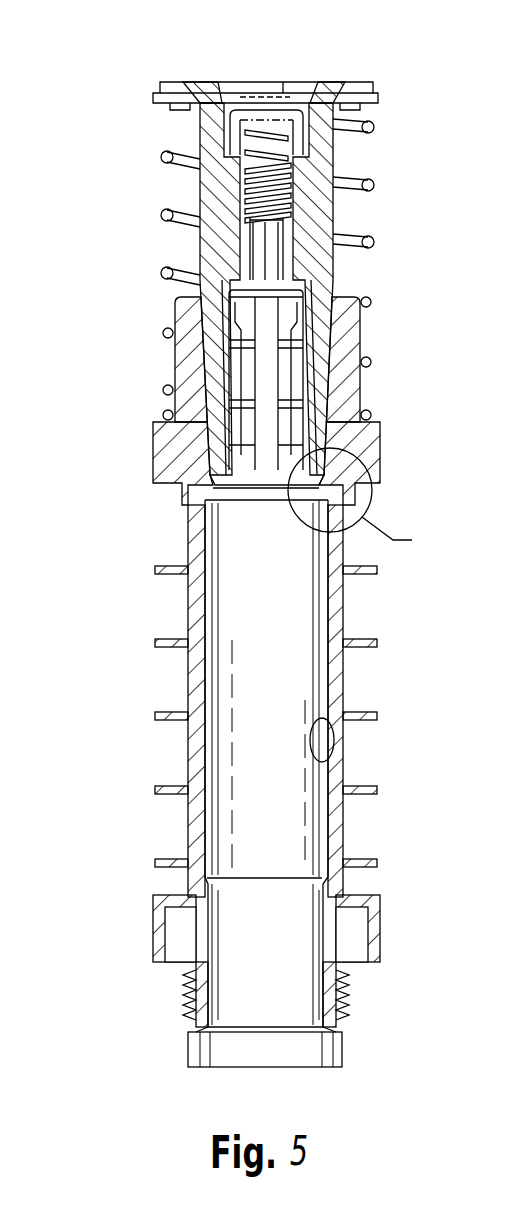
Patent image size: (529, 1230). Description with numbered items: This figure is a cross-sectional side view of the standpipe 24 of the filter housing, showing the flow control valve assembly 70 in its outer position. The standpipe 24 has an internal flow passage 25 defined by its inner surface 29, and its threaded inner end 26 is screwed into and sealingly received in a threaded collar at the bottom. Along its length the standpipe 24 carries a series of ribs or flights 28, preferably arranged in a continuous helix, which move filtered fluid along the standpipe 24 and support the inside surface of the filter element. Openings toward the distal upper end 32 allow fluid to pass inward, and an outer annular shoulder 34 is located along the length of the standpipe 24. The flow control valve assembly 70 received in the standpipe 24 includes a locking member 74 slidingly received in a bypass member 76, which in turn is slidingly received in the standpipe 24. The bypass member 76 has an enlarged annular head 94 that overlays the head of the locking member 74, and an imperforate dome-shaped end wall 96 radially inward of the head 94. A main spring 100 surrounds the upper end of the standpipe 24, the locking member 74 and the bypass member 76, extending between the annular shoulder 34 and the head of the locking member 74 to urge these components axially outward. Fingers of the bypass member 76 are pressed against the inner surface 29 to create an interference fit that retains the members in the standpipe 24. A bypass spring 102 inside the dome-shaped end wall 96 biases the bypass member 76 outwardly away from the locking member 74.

The flow control valve assembly 70 is at (433, 121).
The enlarged annular head 94 is at (180, 86).
The dome-shaped end wall 96 is at (242, 113).
The bypass spring 102 is at (228, 130).
The main spring 100 is at (166, 214).
The bypass member 76 is at (333, 156).
The distal (upper) end 32 is at (183, 312).
The locking member 74 is at (330, 327).
The outer annular shoulder 34 is at (163, 462).
The ribs or flights 28 is at (187, 718).
The inner surface 29 is at (336, 760).
The internal flow passage 25 is at (278, 792).
The standpipe 24 is at (340, 827).
The threaded inner end 26 is at (348, 996).